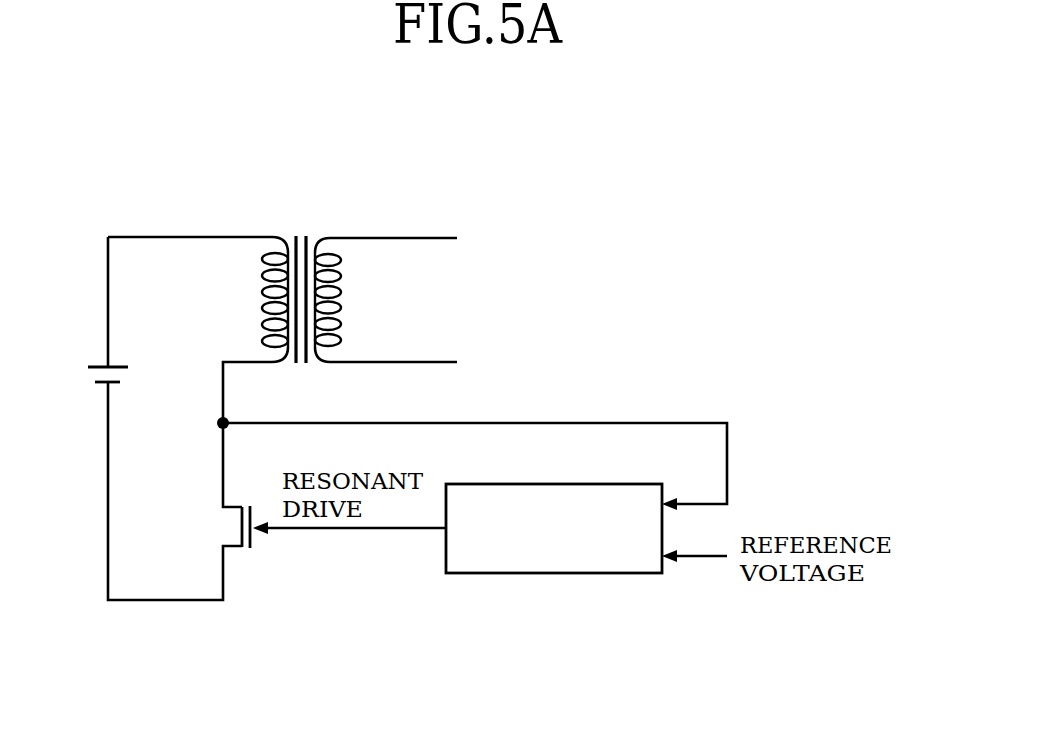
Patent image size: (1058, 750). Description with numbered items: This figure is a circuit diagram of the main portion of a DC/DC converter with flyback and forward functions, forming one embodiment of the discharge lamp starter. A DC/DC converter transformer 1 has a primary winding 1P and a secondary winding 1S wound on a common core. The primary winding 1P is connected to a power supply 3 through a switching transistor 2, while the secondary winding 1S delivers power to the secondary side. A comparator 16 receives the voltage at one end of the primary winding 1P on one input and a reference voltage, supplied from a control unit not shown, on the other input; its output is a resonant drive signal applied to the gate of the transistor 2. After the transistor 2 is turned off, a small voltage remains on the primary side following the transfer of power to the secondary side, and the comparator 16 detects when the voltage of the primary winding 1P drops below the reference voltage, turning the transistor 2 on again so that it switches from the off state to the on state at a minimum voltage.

The DC/DC converter transformer 1 is at (303, 236).
The primary winding 1P is at (265, 251).
The secondary winding 1S is at (328, 252).
The switching transistor 2 is at (237, 556).
The power supply 3 is at (94, 362).
The comparator 16 is at (551, 576).